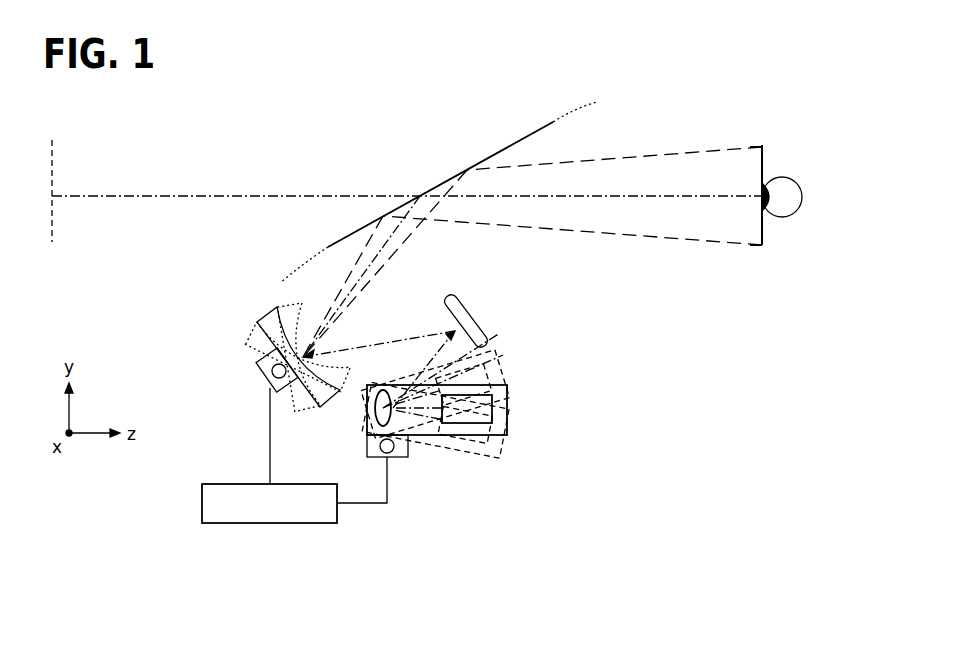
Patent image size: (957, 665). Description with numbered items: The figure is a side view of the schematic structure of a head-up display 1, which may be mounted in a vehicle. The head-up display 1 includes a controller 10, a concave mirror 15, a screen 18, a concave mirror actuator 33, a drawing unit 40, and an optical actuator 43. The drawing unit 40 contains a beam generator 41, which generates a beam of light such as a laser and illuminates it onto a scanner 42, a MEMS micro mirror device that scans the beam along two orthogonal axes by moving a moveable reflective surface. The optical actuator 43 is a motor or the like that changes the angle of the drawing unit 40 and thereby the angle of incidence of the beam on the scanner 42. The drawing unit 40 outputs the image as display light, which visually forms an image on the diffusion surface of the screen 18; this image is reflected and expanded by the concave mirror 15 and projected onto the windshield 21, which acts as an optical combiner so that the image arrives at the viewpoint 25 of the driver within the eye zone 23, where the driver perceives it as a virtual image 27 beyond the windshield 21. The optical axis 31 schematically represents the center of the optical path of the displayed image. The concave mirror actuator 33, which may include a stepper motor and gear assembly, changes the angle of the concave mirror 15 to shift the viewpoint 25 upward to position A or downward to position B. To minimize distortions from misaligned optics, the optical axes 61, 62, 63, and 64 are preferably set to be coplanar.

The head-up display 1 is at (597, 338).
The controller 10 is at (278, 524).
The concave mirror 15 is at (274, 306).
The screen 18 is at (472, 302).
The windshield 21 is at (523, 140).
The eye zone 23 is at (762, 170).
The viewpoint 25 is at (790, 187).
The virtual image 27 is at (55, 147).
The optical axis 31 is at (617, 200).
The concave mirror actuator 33 is at (257, 366).
The drawing unit 40 is at (501, 377).
The beam generator 41 is at (507, 407).
The scanner 42 is at (382, 389).
The optical actuator 43 is at (408, 457).
The optical axis 61 is at (503, 355).
The optical axis 62 is at (500, 333).
The optical axis 63 is at (418, 335).
The optical axis 64 is at (385, 272).